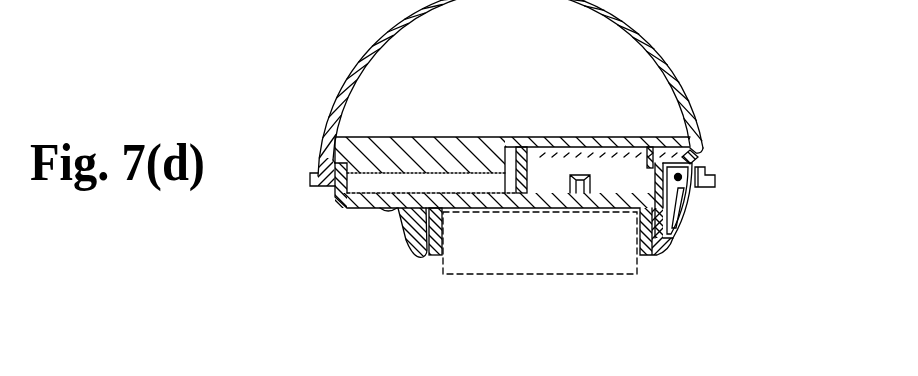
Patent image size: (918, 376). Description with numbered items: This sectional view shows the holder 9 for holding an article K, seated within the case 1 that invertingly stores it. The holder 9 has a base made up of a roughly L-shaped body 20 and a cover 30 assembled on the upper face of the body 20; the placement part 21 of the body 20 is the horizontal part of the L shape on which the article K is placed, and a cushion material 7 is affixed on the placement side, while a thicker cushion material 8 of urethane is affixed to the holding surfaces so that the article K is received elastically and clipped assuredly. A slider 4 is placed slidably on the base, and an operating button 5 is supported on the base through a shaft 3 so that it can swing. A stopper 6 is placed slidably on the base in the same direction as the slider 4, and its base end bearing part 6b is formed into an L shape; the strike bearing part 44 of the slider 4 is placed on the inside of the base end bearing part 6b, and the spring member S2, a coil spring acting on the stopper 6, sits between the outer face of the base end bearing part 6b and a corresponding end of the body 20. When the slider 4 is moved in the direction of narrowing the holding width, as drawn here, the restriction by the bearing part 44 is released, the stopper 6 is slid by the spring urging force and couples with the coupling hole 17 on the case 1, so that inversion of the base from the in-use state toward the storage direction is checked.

The case 1 is at (681, 67).
The cover 30 is at (389, 137).
The spring member S2 is at (431, 173).
The base end bearing part 6b is at (534, 172).
The strike bearing part 44 is at (576, 175).
The coupling hole 17 is at (703, 157).
The stopper 6 is at (706, 160).
The shaft 3 is at (693, 190).
The operating button 5 is at (690, 225).
The body 20 is at (677, 250).
The placement part 21 is at (340, 207).
The cushion material 7 is at (388, 206).
The slider 4 is at (412, 239).
The holder 9 is at (397, 263).
The cushion material 8 is at (437, 257).
The article K is at (551, 268).